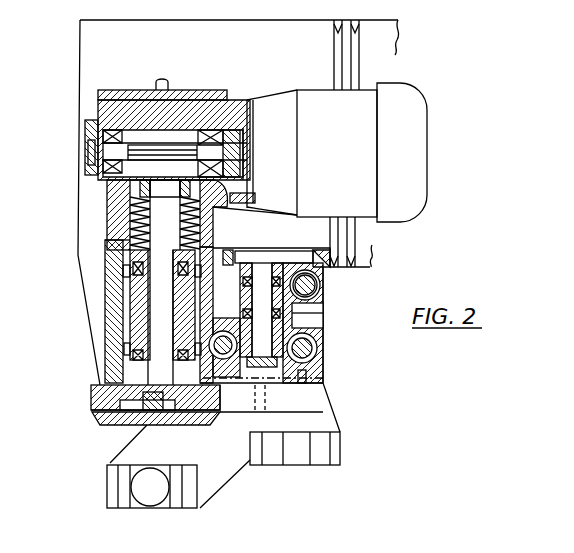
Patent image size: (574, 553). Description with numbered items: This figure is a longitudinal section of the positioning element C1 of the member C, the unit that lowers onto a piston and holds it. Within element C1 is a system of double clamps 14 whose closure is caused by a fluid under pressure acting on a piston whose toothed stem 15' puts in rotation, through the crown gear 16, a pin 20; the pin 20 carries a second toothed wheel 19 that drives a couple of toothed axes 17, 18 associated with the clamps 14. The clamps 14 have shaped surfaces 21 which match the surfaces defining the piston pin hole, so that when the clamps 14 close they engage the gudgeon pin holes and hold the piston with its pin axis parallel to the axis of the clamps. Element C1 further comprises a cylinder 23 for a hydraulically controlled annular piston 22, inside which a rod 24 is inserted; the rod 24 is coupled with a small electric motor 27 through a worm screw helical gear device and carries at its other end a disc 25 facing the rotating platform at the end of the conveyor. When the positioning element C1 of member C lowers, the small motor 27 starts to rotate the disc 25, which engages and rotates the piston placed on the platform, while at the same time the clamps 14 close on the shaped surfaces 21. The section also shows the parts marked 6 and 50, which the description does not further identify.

The member C is at (78, 66).
The positioning element C1 is at (408, 100).
The small electric motor 27 is at (365, 190).
The spring 6 is at (133, 208).
The rod 24 is at (162, 205).
The cylinder 23 is at (107, 273).
The annular piston 22 is at (130, 330).
The disc 25 is at (100, 395).
The base block 50 is at (313, 395).
The double clamps 14 is at (220, 468).
The shaped surfaces 21 is at (140, 485).
The toothed axis 18 is at (230, 329).
The pin 20 is at (320, 321).
The toothed stem 15' is at (338, 285).
The crown gear 16 is at (320, 304).
The toothed axis 17 is at (320, 351).
The second toothed wheel 19 is at (323, 370).